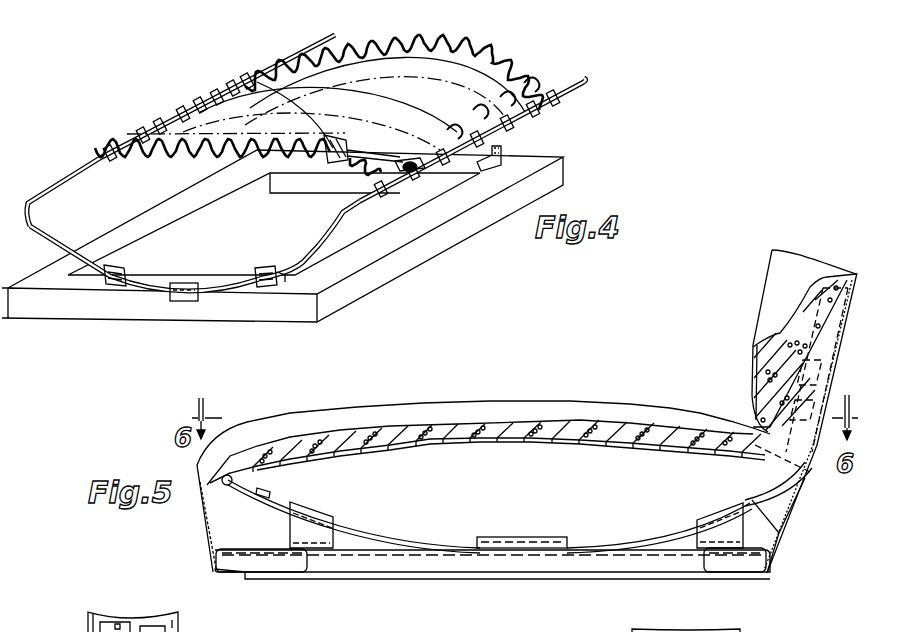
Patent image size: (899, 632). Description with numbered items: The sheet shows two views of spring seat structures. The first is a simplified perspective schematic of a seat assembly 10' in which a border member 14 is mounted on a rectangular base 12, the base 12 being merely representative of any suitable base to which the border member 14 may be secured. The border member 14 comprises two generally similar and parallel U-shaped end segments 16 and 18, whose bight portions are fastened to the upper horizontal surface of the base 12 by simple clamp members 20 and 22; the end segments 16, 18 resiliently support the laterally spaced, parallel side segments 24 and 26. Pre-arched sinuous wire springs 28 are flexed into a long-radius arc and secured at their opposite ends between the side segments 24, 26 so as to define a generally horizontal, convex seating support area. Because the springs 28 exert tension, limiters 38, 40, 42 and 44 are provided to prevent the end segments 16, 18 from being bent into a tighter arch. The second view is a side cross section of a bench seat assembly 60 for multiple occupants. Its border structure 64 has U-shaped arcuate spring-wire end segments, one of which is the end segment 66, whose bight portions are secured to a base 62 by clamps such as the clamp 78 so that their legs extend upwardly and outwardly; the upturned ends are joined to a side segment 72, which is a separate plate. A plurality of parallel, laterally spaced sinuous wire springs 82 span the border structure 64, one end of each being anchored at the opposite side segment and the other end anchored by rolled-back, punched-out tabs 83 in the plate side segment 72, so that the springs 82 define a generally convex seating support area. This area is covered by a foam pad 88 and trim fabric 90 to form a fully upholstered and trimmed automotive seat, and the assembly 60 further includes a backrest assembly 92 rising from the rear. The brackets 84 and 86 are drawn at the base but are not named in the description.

In FIG. 4, the seat assembly 10' is at (433, 60).
In FIG. 4, the rectangular base 12 is at (360, 282).
In FIG. 4, the border member 14 is at (28, 198).
In FIG. 4, the end segment 16 is at (58, 238).
In FIG. 4, the end segment 18 is at (540, 120).
In FIG. 4, the clamp member 20 is at (183, 302).
In FIG. 4, the clamp member 22 is at (410, 160).
In FIG. 4, the side segment 24 is at (140, 141).
In FIG. 4, the side segment 26 is at (355, 203).
In FIG. 4, the sinuous wire springs 28 is at (500, 60).
In FIG. 4, the limiter 38 is at (100, 282).
In FIG. 4, the limiter 40 is at (262, 289).
In FIG. 4, the limiter 42 is at (340, 148).
In FIG. 4, the limiter 44 is at (500, 161).
In FIG. 5, the bench seat assembly 60 is at (700, 405).
In FIG. 5, the base 62 is at (423, 562).
In FIG. 5, the border structure 64 is at (370, 527).
In FIG. 5, the end segment 66 is at (620, 527).
In FIG. 5, the side segment 72 is at (781, 534).
In FIG. 5, the clamp 78 is at (542, 537).
In FIG. 5, the sinuous wire springs 82 is at (470, 442).
In FIG. 5, the rolled-back punched-out tabs 83 is at (800, 473).
In FIG. 5, the front bracket 84 is at (302, 504).
In FIG. 5, the rear bracket 86 is at (737, 503).
In FIG. 5, the foam pad 88 is at (465, 422).
In FIG. 5, the trim fabric 90 is at (206, 522).
In FIG. 5, the backrest assembly 92 is at (770, 303).